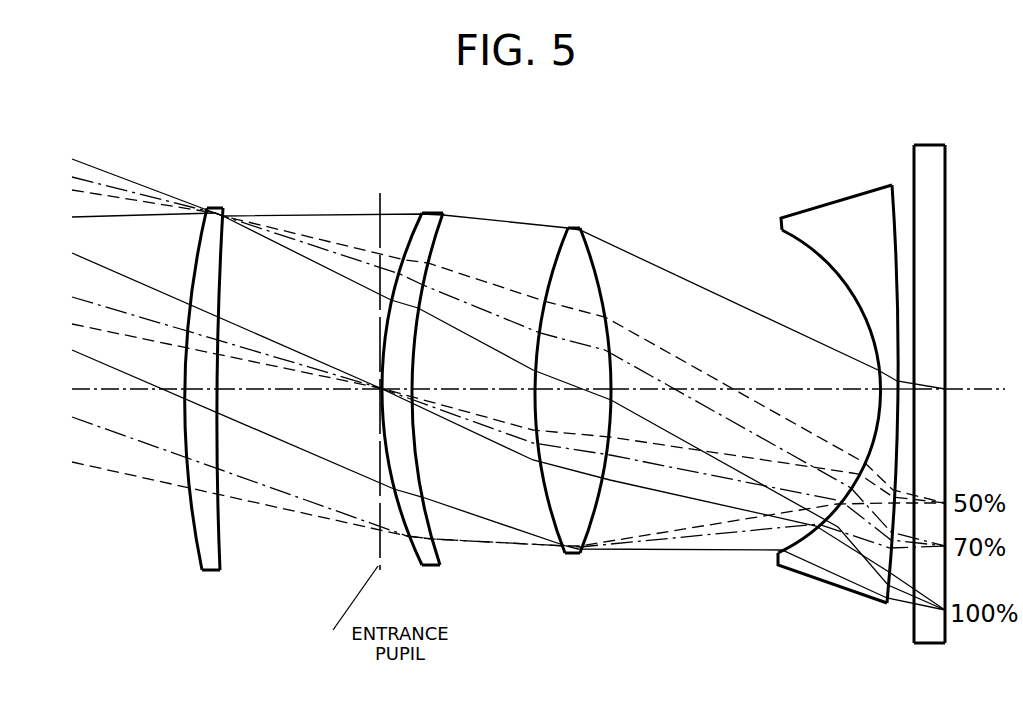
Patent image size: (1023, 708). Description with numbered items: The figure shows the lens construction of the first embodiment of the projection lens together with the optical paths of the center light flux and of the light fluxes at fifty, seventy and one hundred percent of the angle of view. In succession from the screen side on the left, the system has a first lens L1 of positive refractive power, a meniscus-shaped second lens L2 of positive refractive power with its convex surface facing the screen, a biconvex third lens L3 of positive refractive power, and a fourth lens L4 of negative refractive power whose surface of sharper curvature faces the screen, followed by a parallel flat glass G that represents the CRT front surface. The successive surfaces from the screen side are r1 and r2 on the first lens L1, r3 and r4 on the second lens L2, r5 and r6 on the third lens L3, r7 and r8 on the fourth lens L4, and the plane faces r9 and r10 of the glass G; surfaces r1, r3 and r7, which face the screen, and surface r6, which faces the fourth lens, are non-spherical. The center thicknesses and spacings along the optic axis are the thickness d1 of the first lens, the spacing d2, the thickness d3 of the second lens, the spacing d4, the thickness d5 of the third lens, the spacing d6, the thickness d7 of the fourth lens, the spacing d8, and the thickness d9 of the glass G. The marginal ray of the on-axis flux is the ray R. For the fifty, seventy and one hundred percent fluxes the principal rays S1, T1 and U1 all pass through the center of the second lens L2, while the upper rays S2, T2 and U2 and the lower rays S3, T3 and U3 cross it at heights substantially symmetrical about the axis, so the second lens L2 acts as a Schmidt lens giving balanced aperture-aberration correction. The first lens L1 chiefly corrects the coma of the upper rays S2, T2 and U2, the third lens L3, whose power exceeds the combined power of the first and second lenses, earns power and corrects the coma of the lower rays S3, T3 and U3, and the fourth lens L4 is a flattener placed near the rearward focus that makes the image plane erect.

The first lens L1 is at (215, 372).
The second lens L2 is at (425, 374).
The third lens L3 is at (575, 373).
The fourth lens L4 is at (838, 389).
The parallel flat glass G is at (937, 381).
The marginal ray of the on-axis light flux R is at (505, 214).
The principal ray of the 100% light flux U1 is at (487, 425).
The principal ray of the 70% light flux T1 is at (487, 414).
The principal ray of the 50% light flux S1 is at (487, 407).
The upper ray of the 100% light flux U2 is at (447, 329).
The upper ray of the 70% light flux T2 is at (482, 310).
The upper ray of the 50% light flux S2 is at (497, 279).
The lower ray of the 100% light flux U3 is at (305, 450).
The lower ray of the 70% light flux T3 is at (262, 474).
The lower ray of the 50% light flux S3 is at (291, 512).
The center thickness of the first lens d1 is at (199, 377).
The spacing between the first and second lenses d2 is at (299, 404).
The center thickness of the second lens d3 is at (396, 380).
The spacing between the second and third lenses d4 is at (473, 404).
The center thickness of the third lens d5 is at (573, 404).
The spacing between the third and fourth lenses d6 is at (745, 380).
The center thickness of the fourth lens d7 is at (888, 394).
The spacing between the fourth lens and the flat glass d8 is at (908, 400).
The thickness of the parallel flat glass d9 is at (910, 396).
The screen-side surface of the first lens r1 is at (203, 552).
The rear surface of the first lens r2 is at (222, 556).
The screen-side surface of the second lens r3 is at (415, 558).
The rear surface of the second lens r4 is at (441, 557).
The screen-side surface of the third lens r5 is at (563, 556).
The rear surface of the third lens r6 is at (581, 556).
The screen-side surface of the fourth lens r7 is at (800, 548).
The rear surface of the fourth lens r8 is at (882, 592).
The front surface of the parallel flat glass r9 is at (911, 630).
The rear surface of the parallel flat glass r10 is at (947, 633).